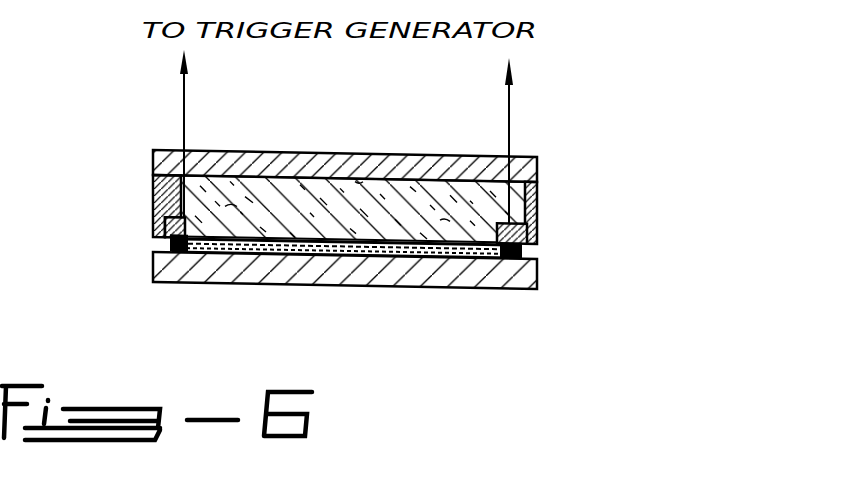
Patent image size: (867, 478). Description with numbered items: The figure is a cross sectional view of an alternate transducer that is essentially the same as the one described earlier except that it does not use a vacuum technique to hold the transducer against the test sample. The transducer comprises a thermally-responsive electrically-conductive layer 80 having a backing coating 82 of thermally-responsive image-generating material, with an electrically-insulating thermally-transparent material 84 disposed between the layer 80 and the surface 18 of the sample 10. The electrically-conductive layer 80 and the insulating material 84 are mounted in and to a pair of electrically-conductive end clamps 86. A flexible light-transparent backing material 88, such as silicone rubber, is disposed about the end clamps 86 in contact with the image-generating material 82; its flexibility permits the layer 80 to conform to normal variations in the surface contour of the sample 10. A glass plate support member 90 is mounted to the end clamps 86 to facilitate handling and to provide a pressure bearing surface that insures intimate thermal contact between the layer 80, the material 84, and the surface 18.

The glass plate support member 90 is at (285, 128).
The flexible light-transparent backing material 88 is at (311, 215).
The electrically-conductive end clamps 86 is at (166, 222).
The thermally-responsive electrically-conductive layer 80 is at (248, 246).
The backing coating of thermally-responsive-image-generating material 82 is at (346, 283).
The surface of sample 18 is at (346, 287).
The electrically-insulating thermally-transparent material 84 is at (347, 290).
The sample 10 is at (168, 266).